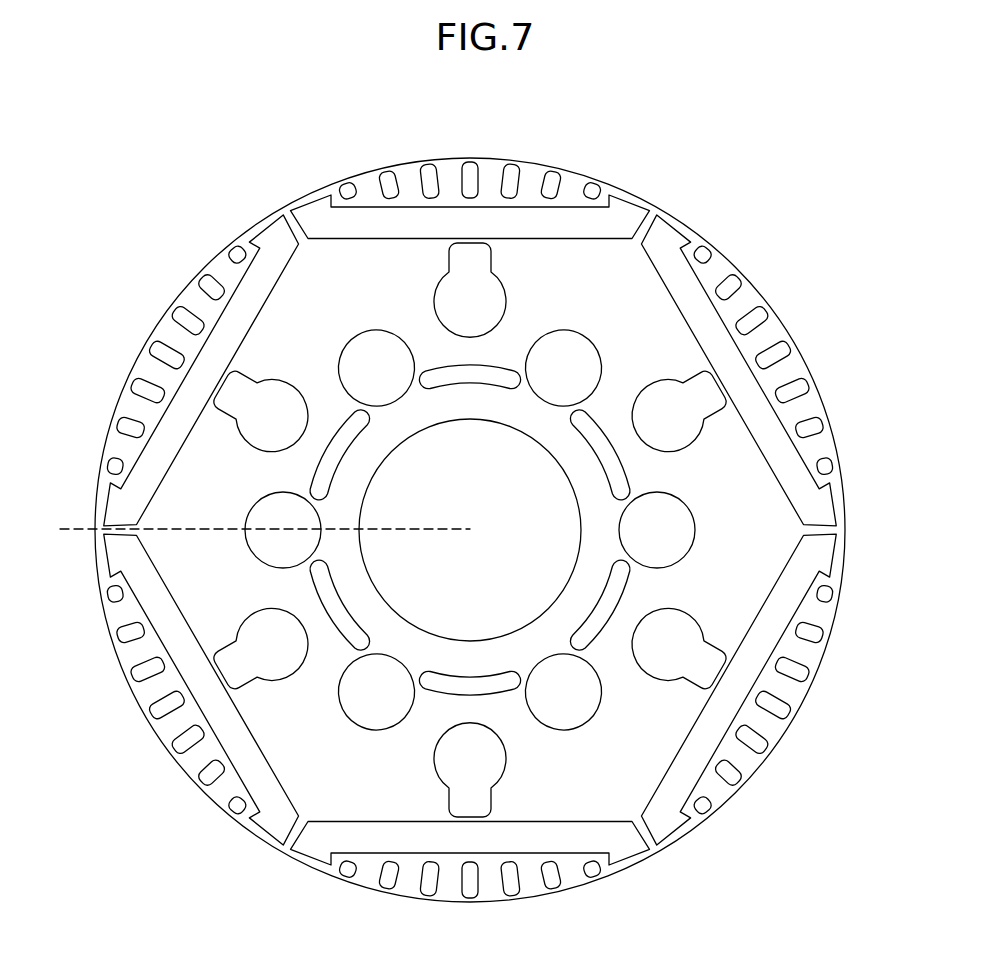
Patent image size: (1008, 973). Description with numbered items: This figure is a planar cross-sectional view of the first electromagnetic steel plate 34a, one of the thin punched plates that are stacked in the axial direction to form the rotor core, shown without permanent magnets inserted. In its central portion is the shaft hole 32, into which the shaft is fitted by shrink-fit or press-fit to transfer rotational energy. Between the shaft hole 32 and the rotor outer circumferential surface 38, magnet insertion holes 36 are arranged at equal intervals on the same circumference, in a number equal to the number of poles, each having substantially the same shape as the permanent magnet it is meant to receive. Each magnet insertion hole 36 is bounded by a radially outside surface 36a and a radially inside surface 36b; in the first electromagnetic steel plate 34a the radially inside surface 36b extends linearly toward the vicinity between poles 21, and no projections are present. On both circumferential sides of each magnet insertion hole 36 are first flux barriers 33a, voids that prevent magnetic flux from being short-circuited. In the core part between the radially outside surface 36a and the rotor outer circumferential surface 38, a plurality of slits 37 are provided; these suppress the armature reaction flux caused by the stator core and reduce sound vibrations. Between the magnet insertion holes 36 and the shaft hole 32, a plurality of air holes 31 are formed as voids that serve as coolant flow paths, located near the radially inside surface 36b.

The between poles 21 is at (70, 528).
The air hole 31 is at (493, 297).
The shaft hole 32 is at (553, 498).
The first flux barrier 33a is at (668, 238).
The first electromagnetic steel plate 34a is at (308, 270).
The magnet insertion hole 36 is at (572, 217).
The radially outside surface of magnet insertion hole 36a is at (437, 207).
The radially inside surface of magnet insertion hole 36b is at (523, 237).
The slit 37 is at (206, 293).
The rotor outer circumferential surface 38 is at (812, 371).